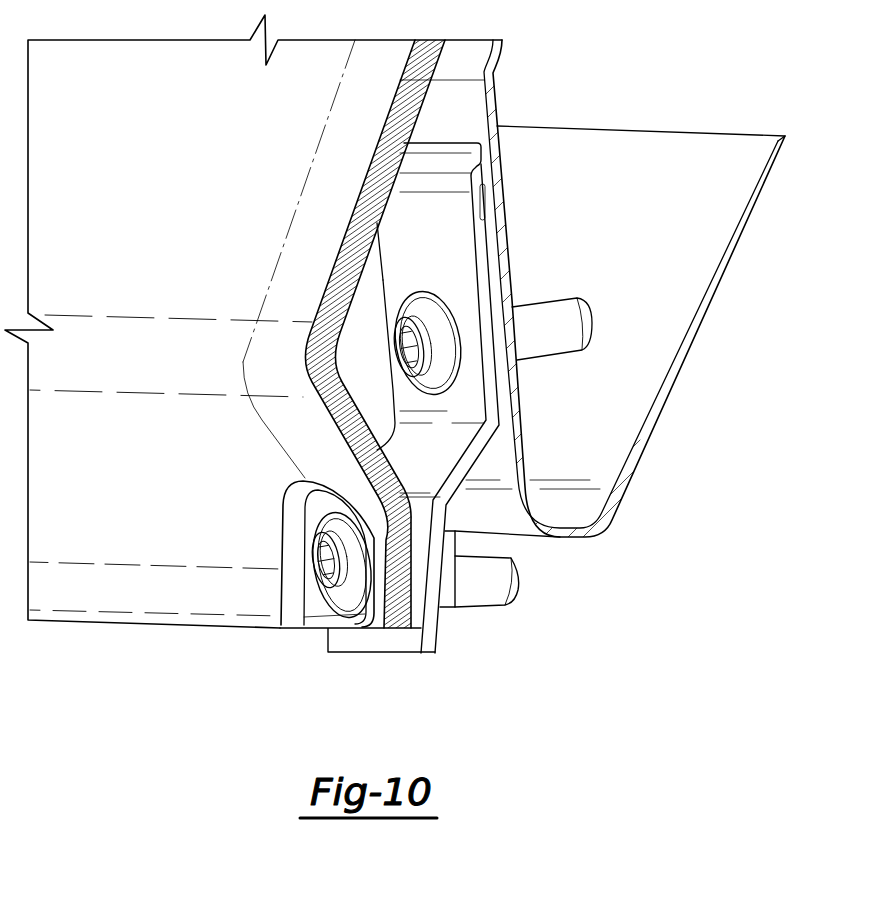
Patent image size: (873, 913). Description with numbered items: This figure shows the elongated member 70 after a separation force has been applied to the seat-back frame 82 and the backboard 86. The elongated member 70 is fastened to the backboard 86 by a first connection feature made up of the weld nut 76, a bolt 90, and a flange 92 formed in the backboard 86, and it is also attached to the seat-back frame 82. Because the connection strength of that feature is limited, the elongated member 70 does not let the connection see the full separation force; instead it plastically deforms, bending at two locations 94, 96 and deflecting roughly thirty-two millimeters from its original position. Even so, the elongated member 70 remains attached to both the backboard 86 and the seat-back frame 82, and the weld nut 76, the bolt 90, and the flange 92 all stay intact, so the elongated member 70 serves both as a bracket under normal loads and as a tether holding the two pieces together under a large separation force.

The elongated member 70 is at (358, 655).
The weld nut 76 is at (443, 615).
The seat-back frame 82 is at (713, 300).
The backboard 86 is at (172, 626).
The bolt 90 is at (521, 592).
The flange 92 is at (401, 617).
The first bend location 94 is at (455, 417).
The second bend location 96 is at (425, 503).